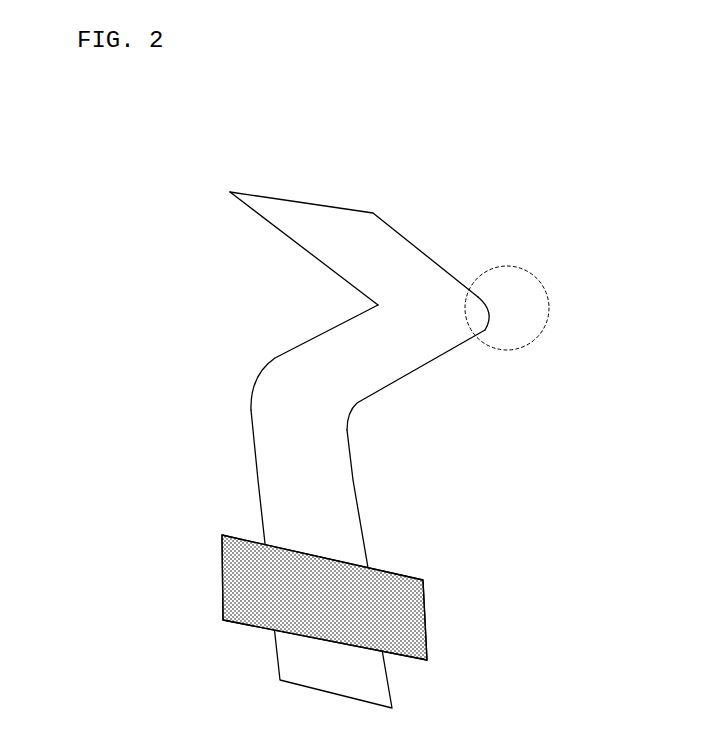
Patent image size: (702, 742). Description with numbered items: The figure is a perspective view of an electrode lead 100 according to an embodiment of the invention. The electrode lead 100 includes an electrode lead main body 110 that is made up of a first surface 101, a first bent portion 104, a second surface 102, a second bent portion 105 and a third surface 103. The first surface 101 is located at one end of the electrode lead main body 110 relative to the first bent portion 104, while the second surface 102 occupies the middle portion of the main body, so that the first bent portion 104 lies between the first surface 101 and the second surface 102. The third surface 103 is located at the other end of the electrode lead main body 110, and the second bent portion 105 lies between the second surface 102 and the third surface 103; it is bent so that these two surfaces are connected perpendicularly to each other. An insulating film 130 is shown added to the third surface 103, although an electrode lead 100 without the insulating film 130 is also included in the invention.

The electrode lead 100 is at (108, 149).
The electrode lead main body 110 is at (113, 243).
The first surface 101 is at (350, 242).
The second surface 102 is at (337, 370).
The third surface 103 is at (290, 527).
The first bent portion 104 is at (459, 321).
The second bent portion 105 is at (386, 427).
The insulating film 130 is at (423, 602).